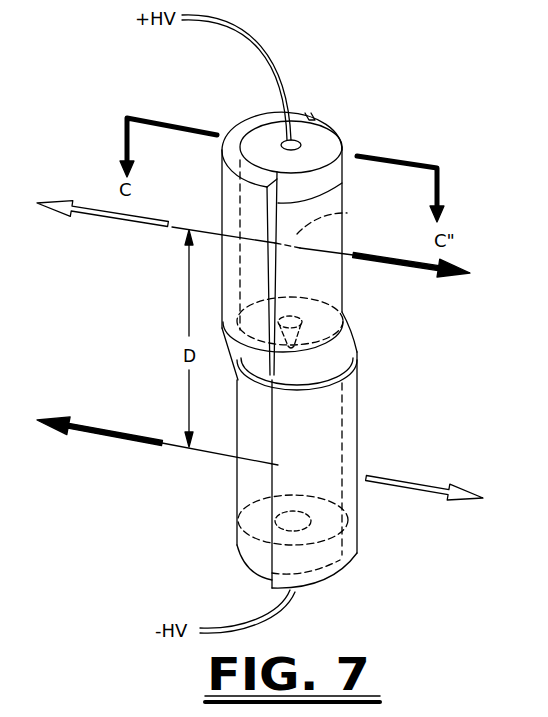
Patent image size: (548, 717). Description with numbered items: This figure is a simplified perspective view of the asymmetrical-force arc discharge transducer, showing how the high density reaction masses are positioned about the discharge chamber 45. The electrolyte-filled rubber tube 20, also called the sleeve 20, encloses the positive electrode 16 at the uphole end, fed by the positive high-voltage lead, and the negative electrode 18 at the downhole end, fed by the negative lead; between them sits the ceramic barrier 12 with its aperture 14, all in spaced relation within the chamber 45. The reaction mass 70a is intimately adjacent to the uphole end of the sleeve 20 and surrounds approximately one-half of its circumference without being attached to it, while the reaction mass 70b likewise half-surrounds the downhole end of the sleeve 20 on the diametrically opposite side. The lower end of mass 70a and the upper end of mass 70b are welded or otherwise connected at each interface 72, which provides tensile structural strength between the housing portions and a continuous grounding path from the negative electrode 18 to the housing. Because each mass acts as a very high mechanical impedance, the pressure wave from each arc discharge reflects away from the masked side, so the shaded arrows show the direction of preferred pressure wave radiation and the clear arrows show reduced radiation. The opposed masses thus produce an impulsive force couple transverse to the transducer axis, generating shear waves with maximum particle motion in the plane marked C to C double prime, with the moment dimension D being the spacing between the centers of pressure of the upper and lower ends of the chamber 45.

The ceramic barrier 12 is at (343, 323).
The aperture 14 is at (338, 299).
The positive electrode 16 is at (311, 135).
The negative electrode 18 is at (270, 520).
The rubber tube 20 is at (342, 237).
The discharge chamber 45 is at (349, 215).
The reaction mass 70a is at (222, 190).
The reaction mass 70b is at (360, 400).
The interface 72 is at (274, 380).